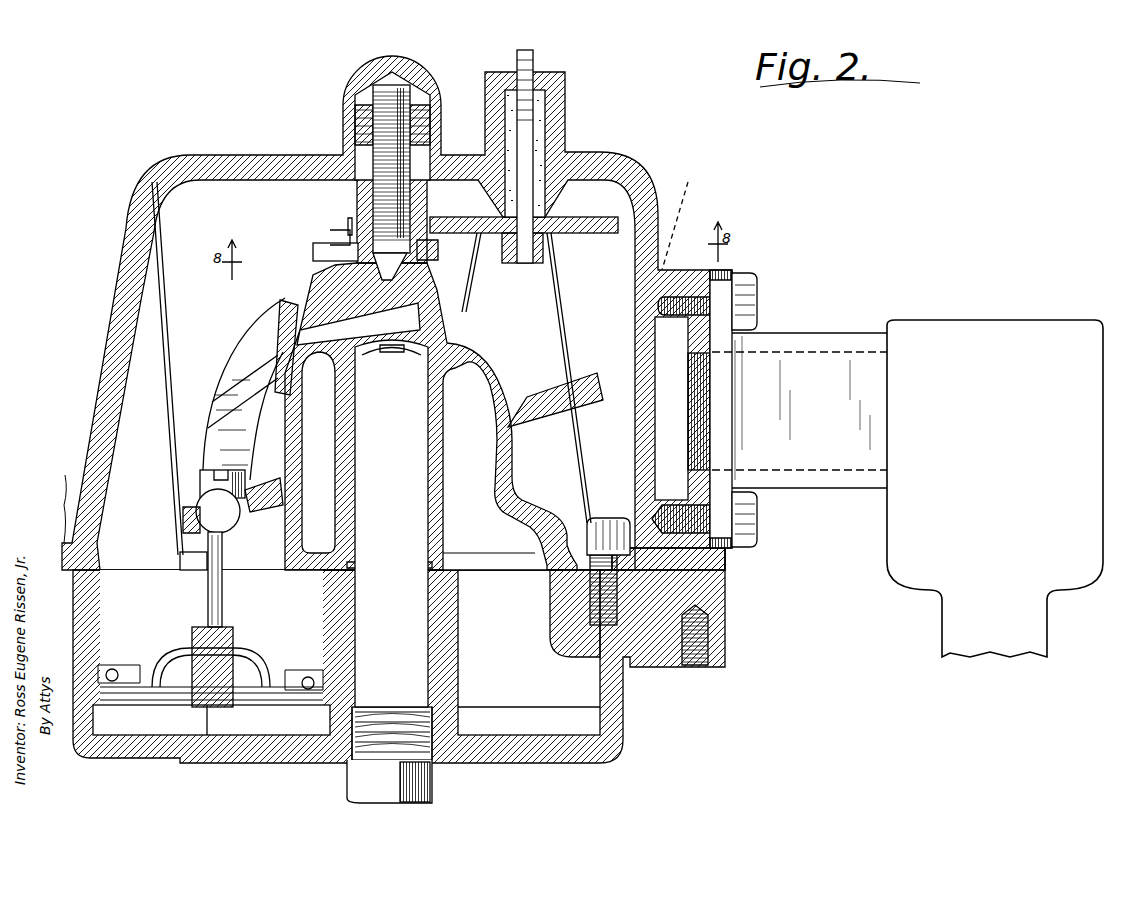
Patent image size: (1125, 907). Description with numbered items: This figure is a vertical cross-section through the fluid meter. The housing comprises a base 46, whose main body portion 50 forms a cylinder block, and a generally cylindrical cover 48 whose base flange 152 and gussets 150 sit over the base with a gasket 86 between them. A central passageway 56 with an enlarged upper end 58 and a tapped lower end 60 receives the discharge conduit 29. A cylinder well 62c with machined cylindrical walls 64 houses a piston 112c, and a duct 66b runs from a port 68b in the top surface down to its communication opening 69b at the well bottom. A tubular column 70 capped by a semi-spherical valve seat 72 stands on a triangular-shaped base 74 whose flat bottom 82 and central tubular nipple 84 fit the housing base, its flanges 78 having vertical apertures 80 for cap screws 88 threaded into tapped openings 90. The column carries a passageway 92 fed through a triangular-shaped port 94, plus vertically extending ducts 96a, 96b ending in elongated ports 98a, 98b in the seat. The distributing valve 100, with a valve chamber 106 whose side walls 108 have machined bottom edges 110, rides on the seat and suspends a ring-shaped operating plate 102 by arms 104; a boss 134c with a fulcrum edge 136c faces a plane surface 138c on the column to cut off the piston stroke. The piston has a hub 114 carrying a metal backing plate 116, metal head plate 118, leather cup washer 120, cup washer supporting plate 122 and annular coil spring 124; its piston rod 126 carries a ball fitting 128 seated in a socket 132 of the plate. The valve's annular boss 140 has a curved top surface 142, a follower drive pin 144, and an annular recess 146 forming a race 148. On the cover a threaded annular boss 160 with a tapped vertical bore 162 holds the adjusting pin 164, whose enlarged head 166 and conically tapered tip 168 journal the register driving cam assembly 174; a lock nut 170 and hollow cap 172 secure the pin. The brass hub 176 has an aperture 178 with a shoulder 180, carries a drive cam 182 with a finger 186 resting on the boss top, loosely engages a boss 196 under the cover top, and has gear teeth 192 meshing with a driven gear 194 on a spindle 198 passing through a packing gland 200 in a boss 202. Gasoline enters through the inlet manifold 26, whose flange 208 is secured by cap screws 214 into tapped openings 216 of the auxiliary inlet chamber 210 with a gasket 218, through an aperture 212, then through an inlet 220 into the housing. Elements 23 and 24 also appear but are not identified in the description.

The carburetor 23 is at (105, 352).
The fuel tank 24 is at (1010, 320).
The inlet manifold 26 is at (828, 332).
The discharge conduit 29 is at (433, 785).
The base 46 is at (628, 703).
The cover 48 is at (120, 240).
The main body portion 50 is at (70, 755).
The passageway 56 is at (458, 640).
The enlarged upper end 58 is at (450, 588).
The tapped lower end 60 is at (352, 758).
The cylinder well 62c is at (110, 598).
The cylindrical walls 64 is at (310, 633).
The duct 66b is at (458, 668).
The port 68b is at (535, 568).
The duct communication opening 69b is at (529, 717).
The tubular column 70 is at (512, 455).
The valve seat 72 is at (480, 365).
The triangular-shaped base 74 is at (548, 510).
The flange 78 is at (608, 518).
The vertical aperture 80 is at (575, 530).
The flat bottom 82 is at (235, 620).
The central tubular nipple 84 is at (432, 575).
The gasket 86 is at (727, 568).
The cap screws 88 is at (610, 520).
The tapped opening 90 is at (635, 596).
The passageway 92 is at (357, 430).
The triangular-shaped port 94 is at (395, 358).
The vertically extending duct 96a is at (357, 455).
The vertically extending duct 96b is at (440, 480).
The elongated port 98a is at (318, 452).
The elongated port 98b is at (478, 352).
The distributing valve 100 is at (255, 360).
The operating plate 102 is at (565, 372).
The arms 104 is at (255, 330).
The valve chamber 106 is at (358, 324).
The side walls 108 is at (250, 378).
The bottom edges 110 is at (255, 392).
The piston 112c is at (180, 650).
The hub 114 is at (235, 650).
The metal backing plate 116 is at (240, 722).
The metal head plate 118 is at (270, 670).
The leather cup washer 120 is at (370, 668).
The cup washer supporting plate 122 is at (372, 686).
The annular coil spring 124 is at (368, 648).
The piston rod 126 is at (222, 588).
The ball fitting 128 is at (200, 470).
The sockets 132 is at (262, 482).
The boss 134c is at (327, 519).
The fulcrum edge 136c is at (348, 486).
The plane surface 138c is at (269, 432).
The annular boss 140 is at (250, 268).
The top surface 142 is at (285, 288).
The follower drive pin 144 is at (352, 318).
The annular recess 146 is at (250, 284).
The race 148 is at (255, 298).
The gussets 150 is at (560, 322).
The base flange 152 is at (63, 496).
The threaded annular boss 160 is at (430, 140).
The tapped vertical bore 162 is at (430, 105).
The adjusting pin 164 is at (438, 70).
The enlarged head 166 is at (330, 236).
The conically tapered tip 168 is at (410, 270).
The lock nut 170 is at (352, 110).
The hollow cap 172 is at (395, 75).
The register driving cam assembly 174 is at (355, 191).
The brass hub 176 is at (446, 188).
The aperture 178 is at (446, 217).
The shoulder 180 is at (446, 203).
The drive cam 182 is at (300, 222).
The finger 186 is at (313, 250).
The gear teeth 192 is at (348, 228).
The driven gear 194 is at (598, 217).
The boss 196 is at (345, 155).
The spindle 198 is at (535, 55).
The packing gland 200 is at (548, 108).
The boss 202 is at (548, 122).
The flange 208 is at (730, 270).
The auxiliary inlet chamber 210 is at (660, 380).
The aperture 212 is at (690, 395).
The cap screws 214 is at (760, 515).
The tapped openings 216 is at (715, 478).
The gasket 218 is at (735, 268).
The inlet 220 is at (700, 438).